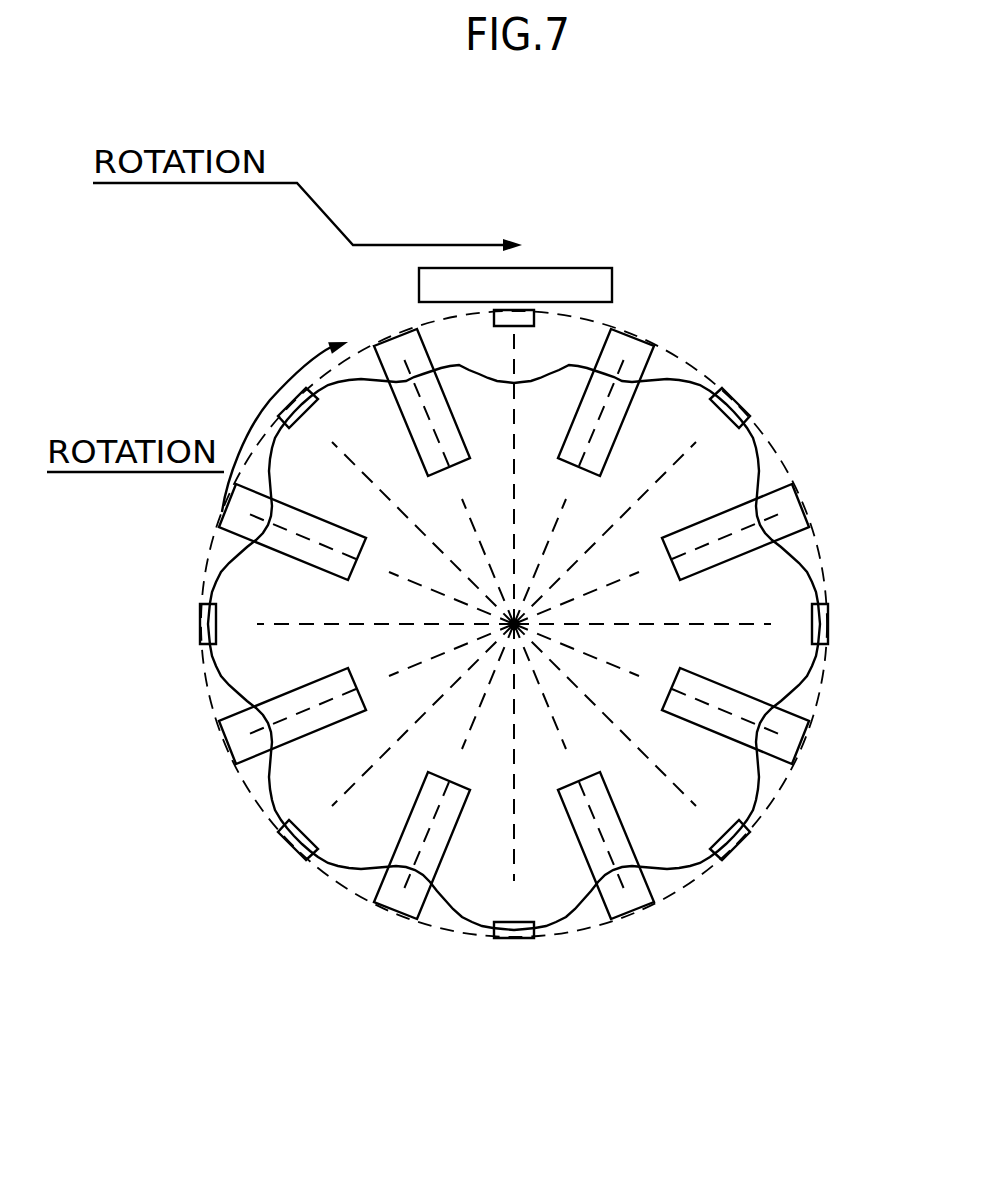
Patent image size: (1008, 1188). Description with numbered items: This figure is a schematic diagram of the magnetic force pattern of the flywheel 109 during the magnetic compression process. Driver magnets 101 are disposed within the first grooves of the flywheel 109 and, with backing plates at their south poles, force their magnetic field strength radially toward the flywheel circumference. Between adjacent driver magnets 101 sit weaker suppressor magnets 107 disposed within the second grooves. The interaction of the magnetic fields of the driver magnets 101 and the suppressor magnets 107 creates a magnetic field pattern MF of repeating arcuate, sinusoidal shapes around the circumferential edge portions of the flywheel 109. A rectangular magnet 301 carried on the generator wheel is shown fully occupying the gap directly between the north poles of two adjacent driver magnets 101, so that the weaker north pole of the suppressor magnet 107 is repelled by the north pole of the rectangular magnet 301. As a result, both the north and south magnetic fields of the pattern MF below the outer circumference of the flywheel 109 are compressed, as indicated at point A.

The rectangular magnet 301 is at (547, 268).
The driver magnet 101 is at (656, 902).
The suppressor magnet 107 is at (527, 940).
The flywheel 109 is at (448, 930).
The point A is at (548, 349).
The magnetic field pattern MF is at (773, 448).